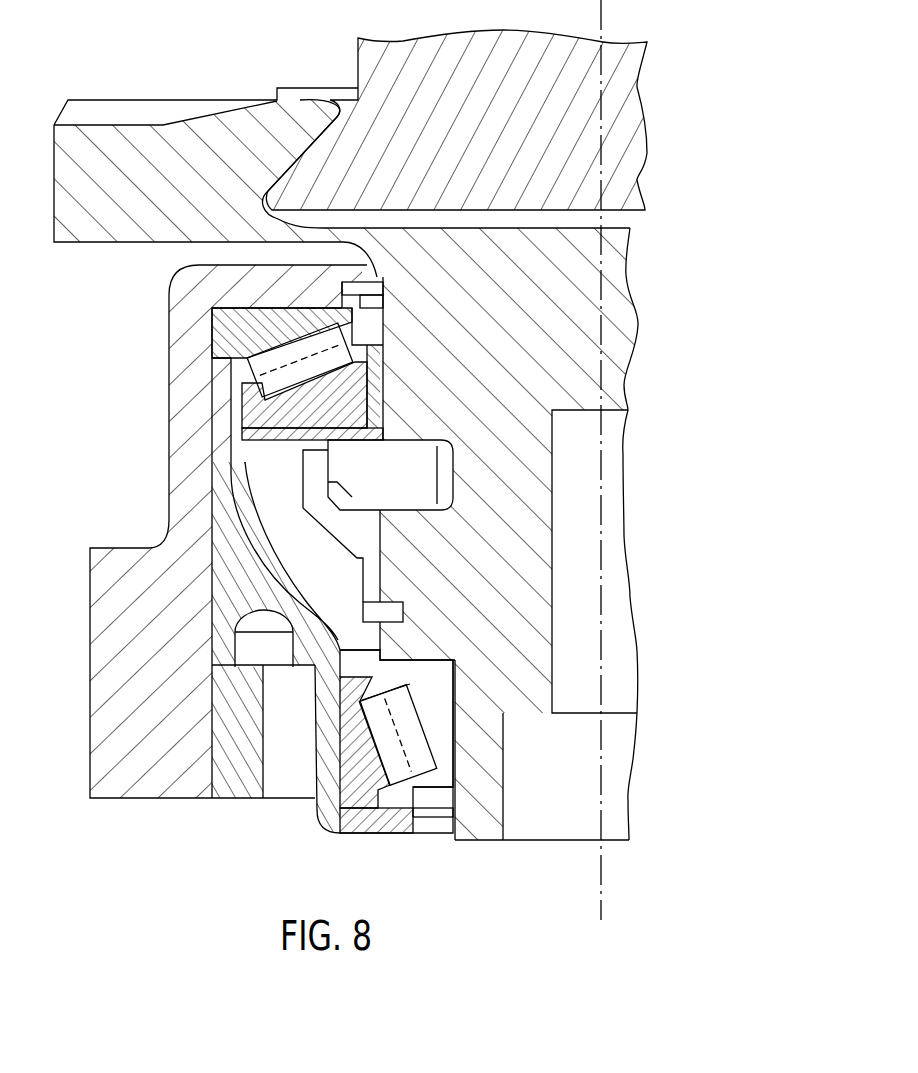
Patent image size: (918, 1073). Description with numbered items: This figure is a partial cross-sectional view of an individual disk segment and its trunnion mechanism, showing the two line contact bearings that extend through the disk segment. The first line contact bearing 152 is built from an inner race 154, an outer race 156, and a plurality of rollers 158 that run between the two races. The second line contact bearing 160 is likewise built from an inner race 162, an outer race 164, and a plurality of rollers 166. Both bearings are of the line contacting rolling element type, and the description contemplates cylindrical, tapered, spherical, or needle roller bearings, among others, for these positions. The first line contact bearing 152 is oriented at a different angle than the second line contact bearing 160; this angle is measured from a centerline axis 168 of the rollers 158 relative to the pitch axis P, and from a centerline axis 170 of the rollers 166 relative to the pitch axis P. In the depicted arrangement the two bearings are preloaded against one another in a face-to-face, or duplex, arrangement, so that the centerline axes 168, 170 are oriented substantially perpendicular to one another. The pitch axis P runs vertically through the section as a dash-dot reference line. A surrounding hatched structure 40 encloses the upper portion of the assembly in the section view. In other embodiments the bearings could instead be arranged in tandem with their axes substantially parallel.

The carrier housing 40 is at (390, 80).
The first line contact bearing 152 is at (431, 810).
The inner race 154 is at (442, 720).
The outer race 156 is at (357, 777).
The rollers 158 is at (400, 755).
The second line contact bearing 160 is at (229, 372).
The inner race 162 is at (272, 388).
The outer race 164 is at (237, 325).
The rollers 166 is at (295, 355).
The centerline axis 168 is at (387, 705).
The centerline axis 170 is at (245, 442).
The pitch axis P is at (603, 549).